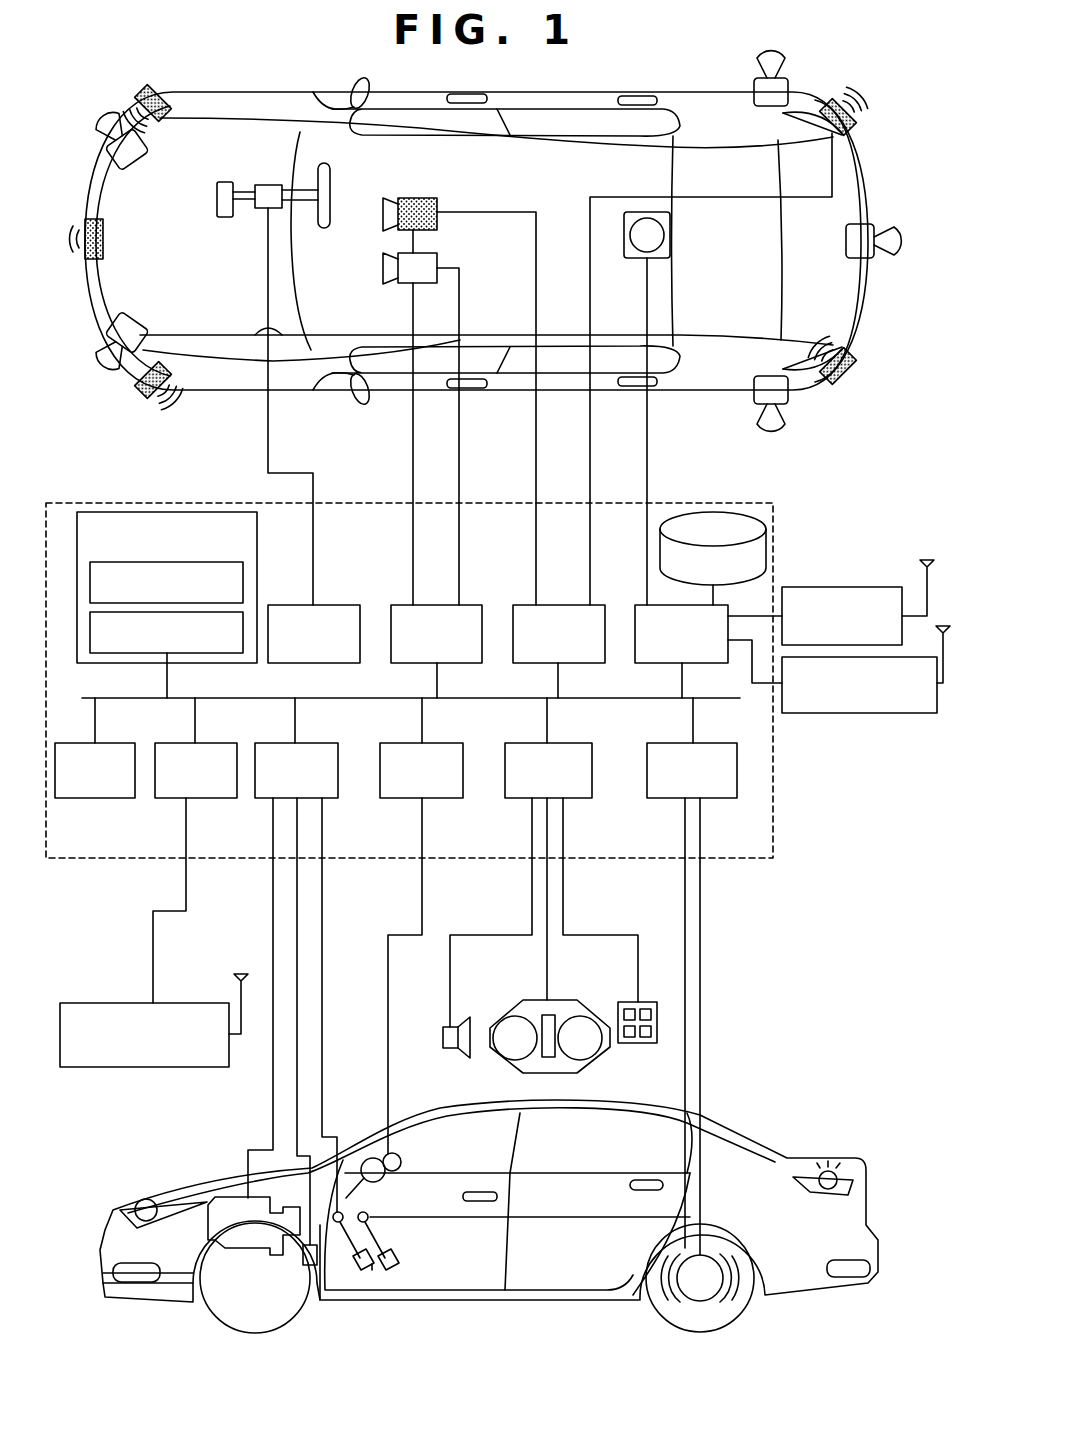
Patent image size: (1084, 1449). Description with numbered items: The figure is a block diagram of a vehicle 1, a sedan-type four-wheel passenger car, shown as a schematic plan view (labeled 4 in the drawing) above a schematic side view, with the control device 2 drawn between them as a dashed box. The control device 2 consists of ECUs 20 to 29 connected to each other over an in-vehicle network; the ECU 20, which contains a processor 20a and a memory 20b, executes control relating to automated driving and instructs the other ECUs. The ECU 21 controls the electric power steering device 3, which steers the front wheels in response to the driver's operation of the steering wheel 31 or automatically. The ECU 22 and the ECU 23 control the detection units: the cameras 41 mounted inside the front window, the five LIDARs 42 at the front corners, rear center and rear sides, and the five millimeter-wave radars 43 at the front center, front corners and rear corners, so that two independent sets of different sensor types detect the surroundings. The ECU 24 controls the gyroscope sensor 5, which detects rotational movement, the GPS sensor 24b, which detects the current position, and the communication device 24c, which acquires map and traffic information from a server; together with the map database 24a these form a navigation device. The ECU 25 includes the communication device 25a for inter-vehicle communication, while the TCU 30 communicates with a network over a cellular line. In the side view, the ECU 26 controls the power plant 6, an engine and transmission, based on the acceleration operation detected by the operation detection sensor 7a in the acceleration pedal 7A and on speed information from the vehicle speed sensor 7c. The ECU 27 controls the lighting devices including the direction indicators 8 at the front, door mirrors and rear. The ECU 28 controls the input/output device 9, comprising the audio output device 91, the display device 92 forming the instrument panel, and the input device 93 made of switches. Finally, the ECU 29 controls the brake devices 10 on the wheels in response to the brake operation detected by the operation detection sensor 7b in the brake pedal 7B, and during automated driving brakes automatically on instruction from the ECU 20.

The vehicle 1 is at (878, 152).
The control device 2 is at (768, 860).
The electric power steering device 3 is at (225, 217).
The vehicle control device 4 is at (104, 86).
The gyroscope sensor 5 is at (672, 238).
The power plant 6 is at (225, 1192).
The operation detection sensor 7a is at (363, 1158).
The operation detection sensor 7b is at (345, 1215).
The acceleration pedal 7A is at (374, 1268).
The brake pedal 7B is at (380, 1250).
The vehicle speed sensor 7c is at (312, 1268).
The direction indicators 8 is at (135, 1206).
The input/output device 9 is at (480, 1075).
The brake devices 10 is at (705, 1302).
The ECU 20 is at (112, 505).
The processor 20a is at (243, 562).
The memory 20b is at (243, 612).
The ECU 21 is at (344, 603).
The ECU 22 is at (431, 603).
The ECU 23 is at (564, 603).
The ECU 24 is at (628, 603).
The map database 24a is at (708, 510).
The GPS sensor 24b is at (870, 585).
The communication device 24c is at (864, 713).
The ECU 25 is at (220, 800).
The communication device 25a is at (146, 1068).
The ECU 26 is at (325, 800).
The ECU 27 is at (442, 800).
The ECU 28 is at (578, 800).
The ECU 29 is at (718, 800).
The TCU 30 is at (118, 800).
The steering wheel 31 is at (325, 228).
The cameras 41 is at (440, 205).
The LIDARs 42 is at (152, 172).
The millimeter-wave radars 43 is at (165, 100).
The audio output device 91 is at (442, 1032).
The display device 92 is at (508, 1015).
The input device 93 is at (645, 1043).